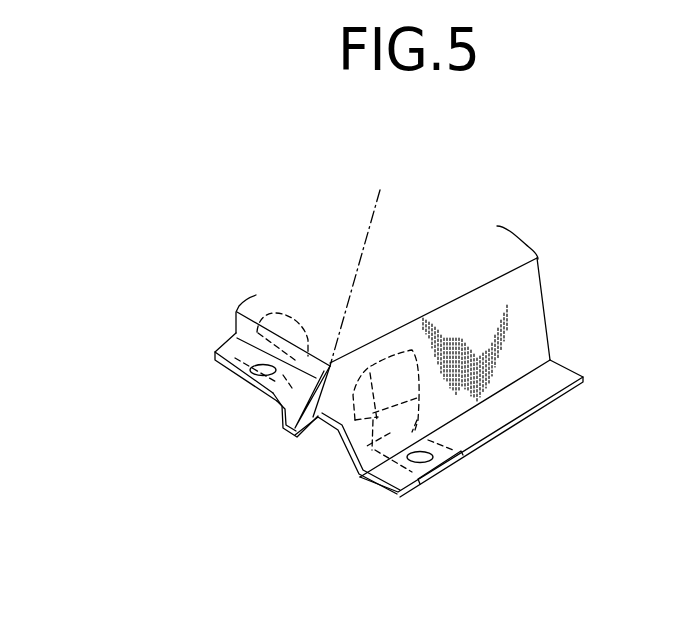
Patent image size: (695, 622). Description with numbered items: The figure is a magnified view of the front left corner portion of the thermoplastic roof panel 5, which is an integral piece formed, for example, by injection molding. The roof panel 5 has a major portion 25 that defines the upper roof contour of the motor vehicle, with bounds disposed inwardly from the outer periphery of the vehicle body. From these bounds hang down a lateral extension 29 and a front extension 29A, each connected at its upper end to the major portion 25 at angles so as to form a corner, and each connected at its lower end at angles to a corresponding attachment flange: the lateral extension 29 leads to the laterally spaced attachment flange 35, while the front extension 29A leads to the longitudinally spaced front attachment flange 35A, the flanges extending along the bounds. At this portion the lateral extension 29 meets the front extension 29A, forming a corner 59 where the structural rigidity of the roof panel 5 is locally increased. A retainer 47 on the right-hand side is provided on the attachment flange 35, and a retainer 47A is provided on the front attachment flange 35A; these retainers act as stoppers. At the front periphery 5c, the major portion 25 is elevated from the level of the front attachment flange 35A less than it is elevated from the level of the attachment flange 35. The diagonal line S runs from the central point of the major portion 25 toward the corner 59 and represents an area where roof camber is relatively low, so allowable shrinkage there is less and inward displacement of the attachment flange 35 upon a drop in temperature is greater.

The roof panel 5 is at (449, 361).
The diagonal line S is at (363, 258).
The major portion 25 is at (223, 345).
The lateral extension 29 is at (522, 300).
The front extension 29A is at (230, 327).
The attachment flange 35 is at (550, 387).
The front attachment flange 35A is at (220, 368).
The retainer 47 is at (370, 483).
The retainer 47A is at (260, 408).
The front periphery 5c is at (217, 357).
The corner 59 is at (323, 438).